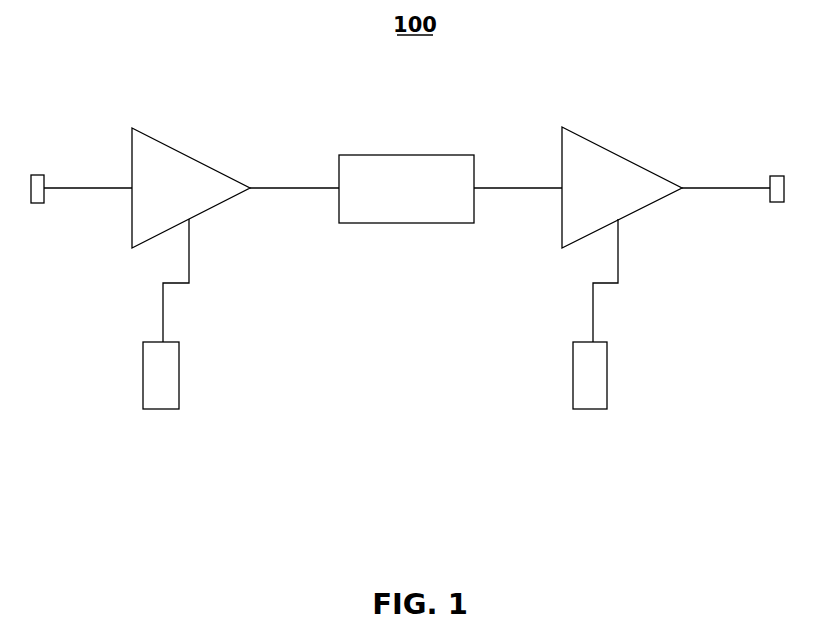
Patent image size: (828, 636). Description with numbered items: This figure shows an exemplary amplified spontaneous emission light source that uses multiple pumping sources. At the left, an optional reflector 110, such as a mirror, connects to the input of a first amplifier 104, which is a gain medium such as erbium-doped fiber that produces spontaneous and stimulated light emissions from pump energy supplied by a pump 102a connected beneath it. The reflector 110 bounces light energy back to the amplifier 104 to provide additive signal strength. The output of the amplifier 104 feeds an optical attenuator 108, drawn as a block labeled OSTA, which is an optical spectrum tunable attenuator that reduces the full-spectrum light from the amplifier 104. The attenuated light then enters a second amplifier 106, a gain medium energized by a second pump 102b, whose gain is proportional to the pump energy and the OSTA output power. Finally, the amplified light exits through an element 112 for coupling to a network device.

The pump 102a is at (180, 357).
The pump 102b is at (609, 357).
The amplifier 104 is at (183, 153).
The amplifier 106 is at (613, 153).
The optical attenuator 108 is at (403, 153).
The reflector 110 is at (38, 173).
The element for coupling to a network device 112 is at (775, 173).